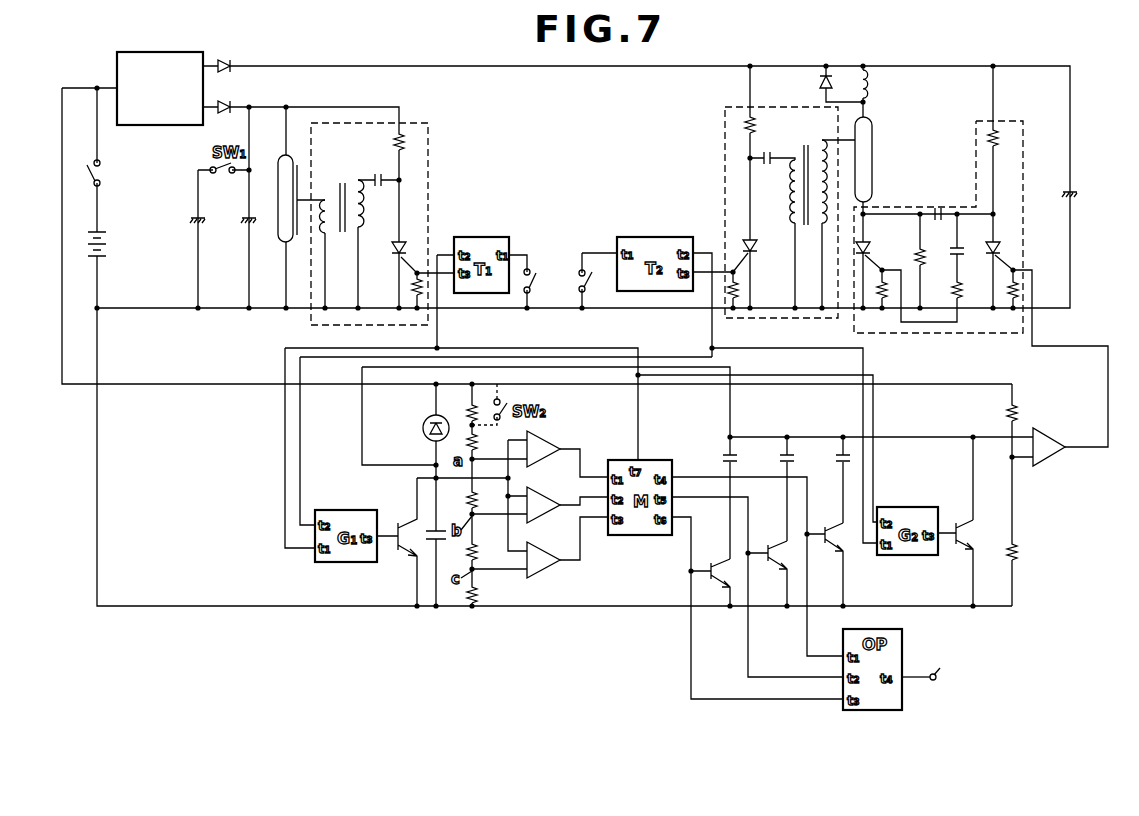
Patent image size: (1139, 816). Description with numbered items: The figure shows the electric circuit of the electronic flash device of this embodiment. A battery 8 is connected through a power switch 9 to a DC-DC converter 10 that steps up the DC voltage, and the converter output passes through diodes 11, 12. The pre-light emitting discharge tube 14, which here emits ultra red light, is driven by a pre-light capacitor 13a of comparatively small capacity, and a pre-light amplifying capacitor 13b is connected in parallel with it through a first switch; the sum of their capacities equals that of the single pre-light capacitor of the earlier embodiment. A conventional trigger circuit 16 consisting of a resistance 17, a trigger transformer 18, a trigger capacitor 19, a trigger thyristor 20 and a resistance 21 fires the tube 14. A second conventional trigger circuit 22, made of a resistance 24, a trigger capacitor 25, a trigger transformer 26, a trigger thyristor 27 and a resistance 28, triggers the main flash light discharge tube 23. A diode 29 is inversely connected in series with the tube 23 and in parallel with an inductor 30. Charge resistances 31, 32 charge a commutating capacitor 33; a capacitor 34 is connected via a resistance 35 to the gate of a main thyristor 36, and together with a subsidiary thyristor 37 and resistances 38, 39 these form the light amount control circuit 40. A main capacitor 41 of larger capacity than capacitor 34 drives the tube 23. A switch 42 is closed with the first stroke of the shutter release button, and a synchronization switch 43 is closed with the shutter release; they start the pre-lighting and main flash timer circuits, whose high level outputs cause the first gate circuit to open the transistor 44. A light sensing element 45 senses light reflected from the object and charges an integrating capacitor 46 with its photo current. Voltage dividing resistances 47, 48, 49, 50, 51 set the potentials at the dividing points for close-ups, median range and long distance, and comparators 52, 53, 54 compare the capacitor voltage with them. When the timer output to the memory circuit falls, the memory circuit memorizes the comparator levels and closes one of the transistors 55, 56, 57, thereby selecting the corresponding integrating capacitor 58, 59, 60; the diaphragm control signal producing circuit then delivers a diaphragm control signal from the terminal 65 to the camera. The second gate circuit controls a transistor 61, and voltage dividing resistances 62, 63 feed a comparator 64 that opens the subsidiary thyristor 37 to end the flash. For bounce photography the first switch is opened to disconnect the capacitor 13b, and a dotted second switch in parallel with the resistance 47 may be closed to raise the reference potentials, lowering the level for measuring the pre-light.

The battery 8 is at (108, 240).
The power switch 9 is at (102, 174).
The DC-DC converter 10 is at (165, 52).
The diode 11 is at (226, 63).
The diode 12 is at (226, 104).
The pre-light capacitor 13a is at (243, 218).
The pre-light amplifying capacitor 13b is at (196, 231).
The pre-light emitting discharge tube 14 is at (280, 165).
The trigger circuit 16 is at (430, 143).
The resistance 17 is at (403, 146).
The trigger transformer 18 is at (343, 238).
The trigger capacitor 19 is at (380, 172).
The trigger thyristor 20 is at (404, 251).
The resistance 21 is at (412, 288).
The trigger circuit 22 is at (725, 140).
The main flash light discharge tube 23 is at (873, 160).
The resistance 24 is at (756, 121).
The trigger capacitor 25 is at (769, 166).
The trigger transformer 26 is at (806, 232).
The trigger thyristor 27 is at (755, 248).
The resistance 28 is at (736, 300).
The diode 29 is at (819, 82).
The inductor 30 is at (870, 84).
The charge resistance 31 is at (1006, 138).
The charge resistance 32 is at (923, 260).
The commutating capacitor 33 is at (942, 225).
The capacitor 34 is at (962, 252).
The resistance 35 is at (971, 290).
The main thyristor 36 is at (870, 249).
The subsidiary thyristor 37 is at (997, 250).
The resistance 38 is at (884, 300).
The resistance 39 is at (1014, 300).
The light amount control circuit 40 is at (1025, 236).
The main capacitor 41 is at (1084, 194).
The switch 42 is at (533, 268).
The synchronization switch 43 is at (578, 282).
The transistor 44 is at (397, 524).
The light sensing element 45 is at (422, 428).
The integrating capacitor 46 is at (441, 530).
The voltage dividing resistance 47 is at (468, 412).
The voltage dividing resistance 48 is at (485, 440).
The voltage dividing resistance 49 is at (485, 497).
The voltage dividing resistance 50 is at (485, 550).
The voltage dividing resistance 51 is at (485, 593).
The comparator 52 is at (538, 458).
The comparator 53 is at (538, 515).
The comparator 54 is at (538, 570).
The transistor 55 is at (827, 564).
The transistor 56 is at (771, 573).
The transistor 57 is at (712, 582).
The integrating capacitor 58 is at (837, 452).
The integrating capacitor 59 is at (781, 452).
The integrating capacitor 60 is at (724, 452).
The transistor 61 is at (960, 563).
The voltage dividing resistance 62 is at (1025, 411).
The voltage dividing resistance 63 is at (1025, 550).
The comparator 64 is at (1046, 460).
The terminal 65 is at (944, 664).